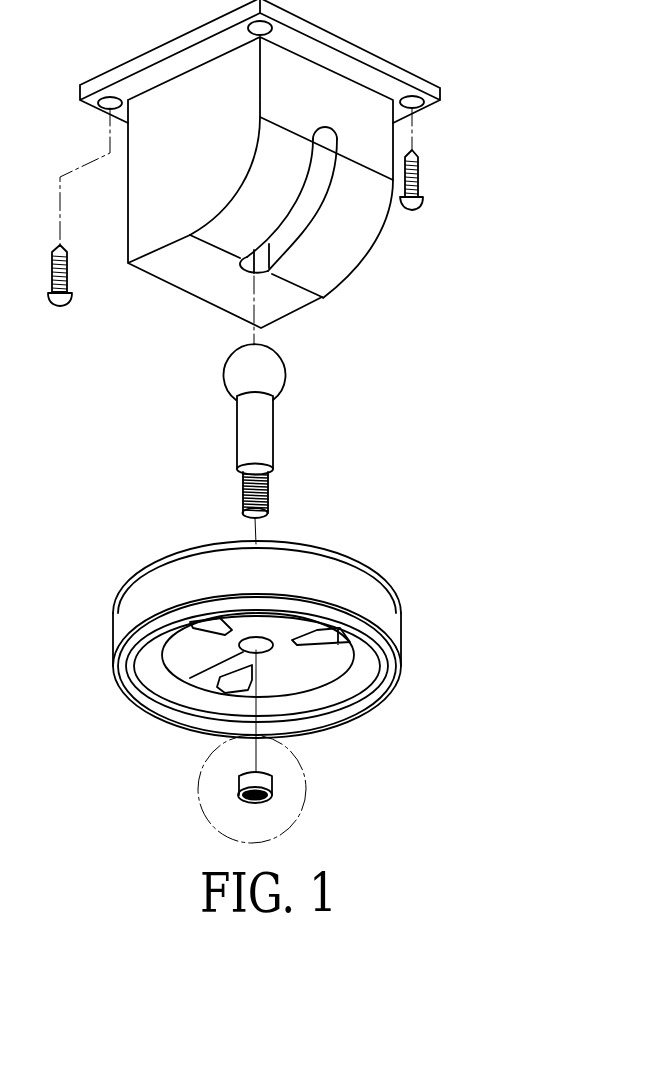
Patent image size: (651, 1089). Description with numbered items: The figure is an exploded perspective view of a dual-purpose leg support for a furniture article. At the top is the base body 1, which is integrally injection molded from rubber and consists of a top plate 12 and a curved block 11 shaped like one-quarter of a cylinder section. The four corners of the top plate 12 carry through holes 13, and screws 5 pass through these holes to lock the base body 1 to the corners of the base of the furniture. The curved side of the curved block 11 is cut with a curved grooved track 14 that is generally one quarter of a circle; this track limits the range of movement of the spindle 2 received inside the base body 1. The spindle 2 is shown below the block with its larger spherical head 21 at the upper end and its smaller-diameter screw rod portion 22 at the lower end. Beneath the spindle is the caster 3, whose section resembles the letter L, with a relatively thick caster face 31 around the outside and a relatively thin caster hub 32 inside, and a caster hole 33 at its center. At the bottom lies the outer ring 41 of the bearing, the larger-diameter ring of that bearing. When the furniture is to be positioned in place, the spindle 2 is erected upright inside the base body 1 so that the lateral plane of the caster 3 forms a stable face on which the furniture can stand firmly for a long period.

The base body 1 is at (291, 204).
The curved block 11 is at (360, 257).
The top plate 12 is at (293, 78).
The through holes 13 is at (415, 107).
The curved grooved track 14 is at (292, 248).
The screws 5 is at (418, 182).
The spindle 2 is at (329, 410).
The spherical head 21 is at (280, 378).
The screw rod portion 22 is at (272, 495).
The caster 3 is at (282, 659).
The caster face 31 is at (378, 603).
The caster hub 32 is at (313, 667).
The caster hole 33 is at (190, 678).
The outer ring 41 is at (270, 782).